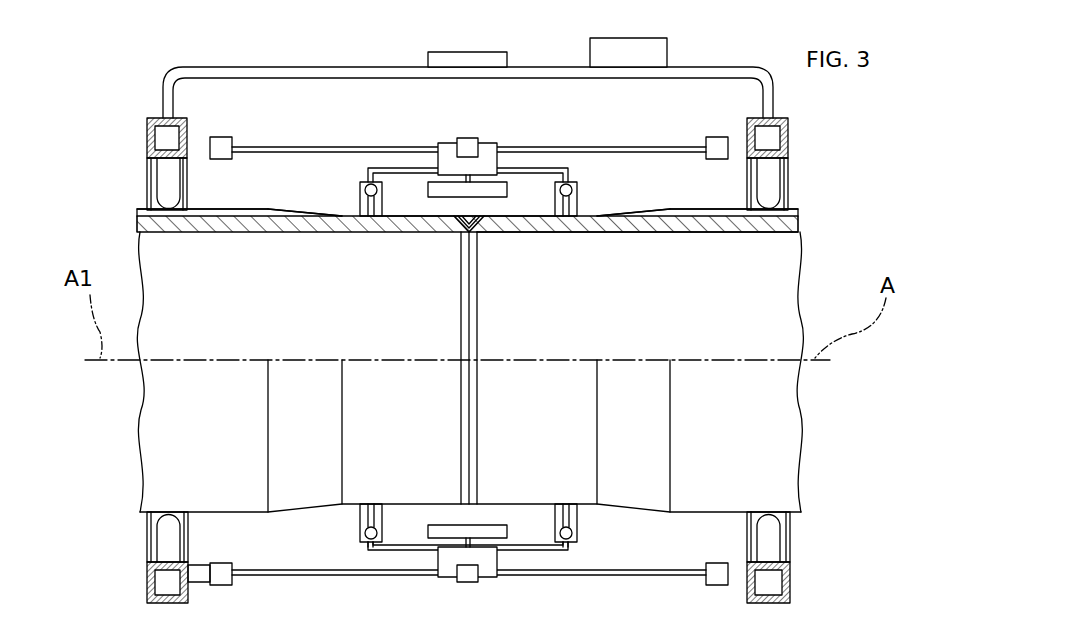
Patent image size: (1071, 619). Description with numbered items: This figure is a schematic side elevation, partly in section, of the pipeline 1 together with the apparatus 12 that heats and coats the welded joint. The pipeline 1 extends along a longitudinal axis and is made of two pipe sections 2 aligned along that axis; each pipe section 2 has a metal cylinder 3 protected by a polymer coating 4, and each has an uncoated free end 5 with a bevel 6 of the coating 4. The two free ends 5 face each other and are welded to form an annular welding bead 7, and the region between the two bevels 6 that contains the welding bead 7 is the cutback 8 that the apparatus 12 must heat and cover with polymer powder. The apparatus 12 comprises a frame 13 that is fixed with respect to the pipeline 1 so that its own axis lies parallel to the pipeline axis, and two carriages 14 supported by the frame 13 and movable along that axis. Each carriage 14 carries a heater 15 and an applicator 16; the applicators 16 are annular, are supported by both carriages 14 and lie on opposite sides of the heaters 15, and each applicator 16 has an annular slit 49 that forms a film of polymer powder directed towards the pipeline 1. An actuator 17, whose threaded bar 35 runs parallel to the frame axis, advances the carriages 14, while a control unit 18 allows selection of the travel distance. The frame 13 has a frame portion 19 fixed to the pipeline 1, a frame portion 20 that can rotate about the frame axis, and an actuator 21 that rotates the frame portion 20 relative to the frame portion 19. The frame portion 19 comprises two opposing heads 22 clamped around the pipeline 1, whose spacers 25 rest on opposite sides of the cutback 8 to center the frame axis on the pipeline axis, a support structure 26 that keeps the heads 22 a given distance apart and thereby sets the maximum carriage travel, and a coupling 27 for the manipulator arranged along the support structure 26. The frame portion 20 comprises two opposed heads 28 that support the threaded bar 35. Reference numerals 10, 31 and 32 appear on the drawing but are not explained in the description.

The pipeline 1 is at (150, 222).
The pipe sections 2 is at (122, 387).
The metal cylinder 3 is at (208, 226).
The polymer coating 4 is at (757, 224).
The free ends 5 is at (428, 212).
The bevel 6 is at (325, 210).
The annular welding bead 7 is at (470, 212).
The cutback 8 is at (404, 192).
The bevel 10 is at (276, 206).
The apparatus 12 is at (530, 105).
The frame 13 is at (454, 548).
The carriages 14 is at (371, 161).
The heater 15 is at (496, 353).
The applicator 16 is at (355, 532).
The actuator 17 is at (470, 130).
The control unit 18 is at (645, 52).
The frame portion 19 is at (135, 548).
The frame portion 20 is at (353, 528).
The actuator 21 is at (200, 572).
The heads 22 is at (145, 573).
The spacers 25 is at (163, 188).
The support structure 26 is at (240, 57).
The coupling 27 is at (447, 52).
The heads 28 is at (246, 563).
The sensor plate 31 is at (468, 182).
The cross bar 32 is at (523, 168).
The threaded bar 35 is at (277, 148).
The annular slit 49 is at (361, 205).